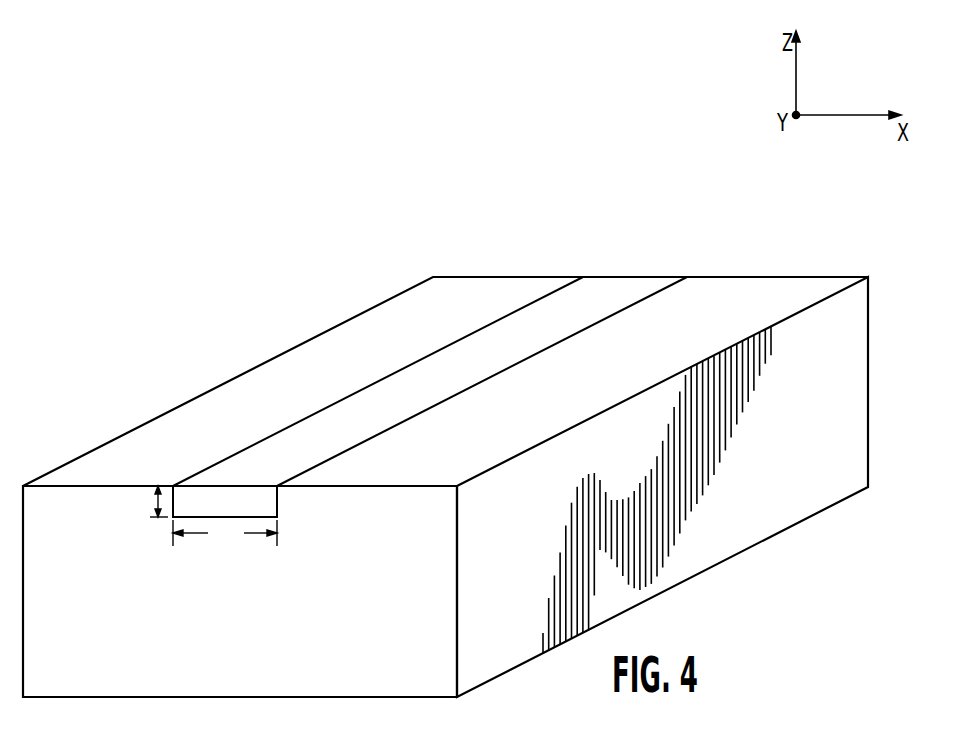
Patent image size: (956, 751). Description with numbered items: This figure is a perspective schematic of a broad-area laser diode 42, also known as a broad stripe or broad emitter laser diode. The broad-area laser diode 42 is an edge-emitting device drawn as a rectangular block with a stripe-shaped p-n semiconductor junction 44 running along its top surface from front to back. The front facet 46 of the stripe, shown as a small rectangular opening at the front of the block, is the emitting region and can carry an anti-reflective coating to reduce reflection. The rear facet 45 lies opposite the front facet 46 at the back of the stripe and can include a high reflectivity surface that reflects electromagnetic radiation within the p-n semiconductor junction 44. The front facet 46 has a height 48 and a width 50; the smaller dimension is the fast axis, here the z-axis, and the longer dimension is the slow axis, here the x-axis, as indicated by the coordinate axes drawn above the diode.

The broad-area laser diode 42 is at (116, 263).
The p-n semiconductor junction 44 is at (502, 352).
The rear facet 45 is at (652, 275).
The front facet 46 is at (240, 514).
The height 48 is at (156, 502).
The width 50 is at (225, 536).